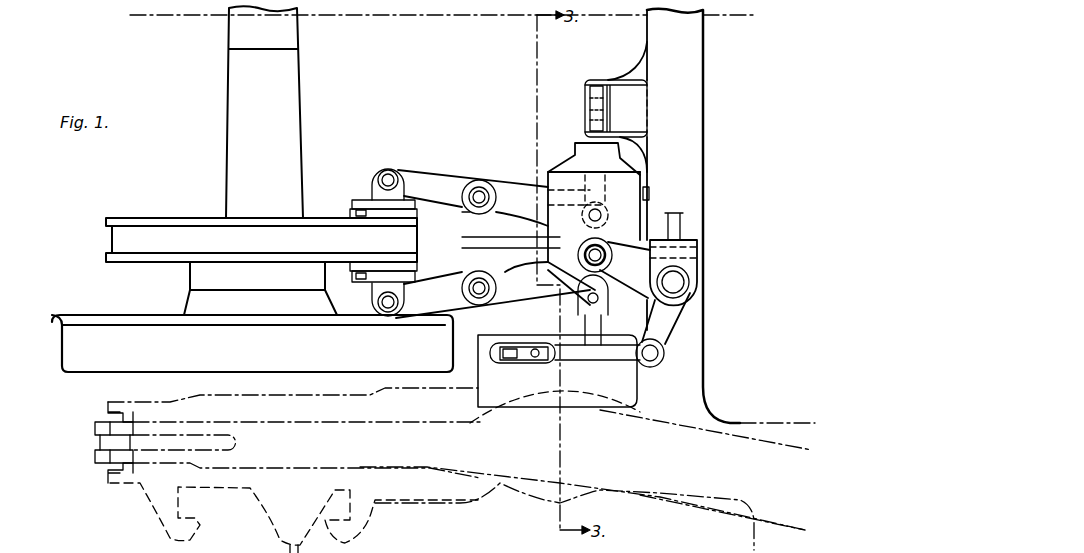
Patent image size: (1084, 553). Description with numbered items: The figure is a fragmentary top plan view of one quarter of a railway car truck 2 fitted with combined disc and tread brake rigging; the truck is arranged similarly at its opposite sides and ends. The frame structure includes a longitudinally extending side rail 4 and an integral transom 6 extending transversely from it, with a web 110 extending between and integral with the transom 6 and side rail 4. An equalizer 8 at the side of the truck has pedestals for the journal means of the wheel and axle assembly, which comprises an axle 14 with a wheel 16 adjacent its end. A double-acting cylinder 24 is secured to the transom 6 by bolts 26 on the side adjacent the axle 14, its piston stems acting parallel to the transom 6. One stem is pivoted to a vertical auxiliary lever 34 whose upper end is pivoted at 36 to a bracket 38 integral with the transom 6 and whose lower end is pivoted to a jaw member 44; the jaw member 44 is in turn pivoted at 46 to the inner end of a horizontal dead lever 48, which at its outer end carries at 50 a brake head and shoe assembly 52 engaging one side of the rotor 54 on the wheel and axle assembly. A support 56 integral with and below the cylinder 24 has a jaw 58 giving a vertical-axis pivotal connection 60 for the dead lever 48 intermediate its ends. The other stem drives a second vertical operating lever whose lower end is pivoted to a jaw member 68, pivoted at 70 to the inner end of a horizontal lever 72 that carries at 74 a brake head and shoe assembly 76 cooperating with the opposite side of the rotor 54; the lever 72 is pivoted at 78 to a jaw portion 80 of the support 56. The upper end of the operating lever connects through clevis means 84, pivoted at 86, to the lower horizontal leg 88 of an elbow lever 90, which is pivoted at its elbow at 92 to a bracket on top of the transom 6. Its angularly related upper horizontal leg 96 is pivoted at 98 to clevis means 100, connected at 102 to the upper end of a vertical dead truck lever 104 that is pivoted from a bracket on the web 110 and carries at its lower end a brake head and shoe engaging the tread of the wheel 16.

The railway car truck 2 is at (108, 486).
The side rail 4 is at (680, 488).
The transom 6 is at (706, 37).
The equalizer 8 is at (96, 462).
The axle 14 is at (243, 72).
The wheel 16 is at (72, 372).
The cylinder 24 is at (620, 160).
The bolts 26 is at (649, 195).
The auxiliary lever 34 is at (594, 86).
The pivot 36 is at (585, 104).
The bracket 38 is at (606, 78).
The jaw member 44 is at (580, 170).
The pivot 46 is at (608, 216).
The dead lever 48 is at (512, 183).
The pivot 50 is at (386, 174).
The brake head and shoe assembly 52 is at (352, 200).
The rotor 54 is at (143, 218).
The support 56 is at (462, 240).
The jaw 58 is at (466, 216).
The pivotal connection 60 is at (478, 188).
The jaw member 68 is at (545, 305).
The pivot 70 is at (545, 292).
The lever 72 is at (508, 275).
The pivot 74 is at (383, 312).
The brake head and shoe assembly 76 is at (350, 272).
The pivot 78 is at (481, 305).
The jaw portion 80 is at (480, 262).
The clevis means 84 is at (575, 312).
The pivot 86 is at (605, 247).
The lower horizontal leg 88 is at (662, 305).
The elbow lever 90 is at (699, 283).
The pivot 92 is at (688, 277).
The upper horizontal leg 96 is at (685, 320).
The pivot 98 is at (665, 357).
The clevis means 100 is at (598, 369).
The connection 102 is at (512, 370).
The dead truck lever 104 is at (490, 352).
The web 110 is at (478, 380).